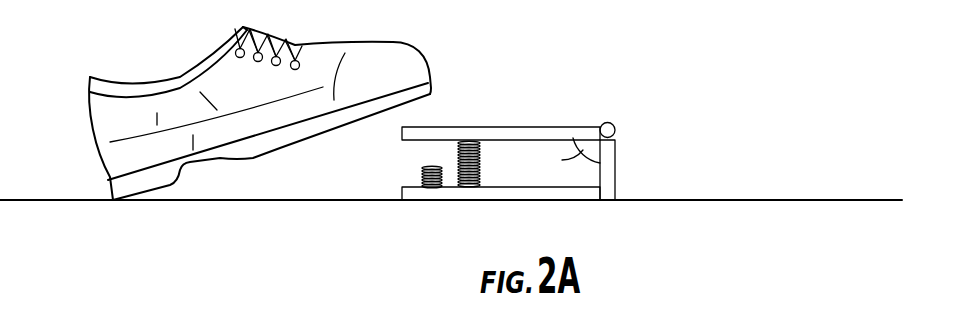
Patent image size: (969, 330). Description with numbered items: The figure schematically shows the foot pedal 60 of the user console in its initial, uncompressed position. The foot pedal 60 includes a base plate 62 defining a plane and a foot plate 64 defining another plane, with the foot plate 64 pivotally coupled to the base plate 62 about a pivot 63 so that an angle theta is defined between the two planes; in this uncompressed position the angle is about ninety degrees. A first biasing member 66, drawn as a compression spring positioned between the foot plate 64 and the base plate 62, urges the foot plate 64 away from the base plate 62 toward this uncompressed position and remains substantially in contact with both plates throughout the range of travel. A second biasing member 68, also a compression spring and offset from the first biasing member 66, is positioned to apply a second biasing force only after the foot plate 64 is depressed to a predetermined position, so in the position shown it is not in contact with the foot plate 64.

The foot pedal 60 is at (537, 127).
The base plate 62 is at (568, 190).
The pivot 63 is at (615, 128).
The foot plate 64 is at (542, 126).
The first biasing member 66 is at (467, 187).
The second biasing member 68 is at (428, 187).